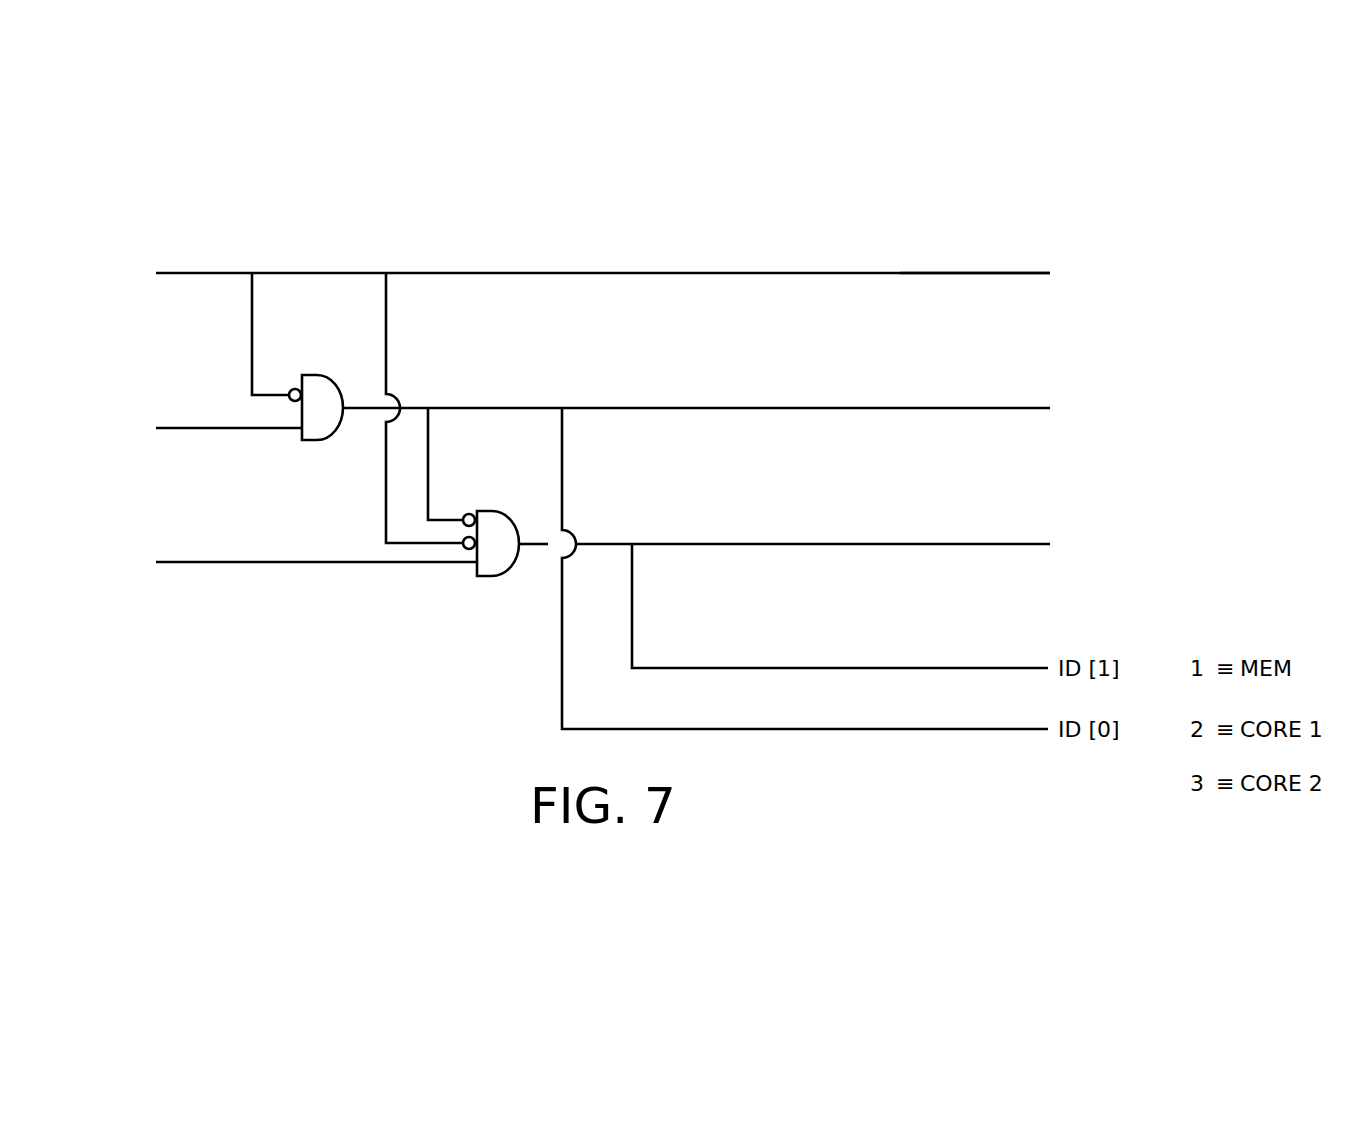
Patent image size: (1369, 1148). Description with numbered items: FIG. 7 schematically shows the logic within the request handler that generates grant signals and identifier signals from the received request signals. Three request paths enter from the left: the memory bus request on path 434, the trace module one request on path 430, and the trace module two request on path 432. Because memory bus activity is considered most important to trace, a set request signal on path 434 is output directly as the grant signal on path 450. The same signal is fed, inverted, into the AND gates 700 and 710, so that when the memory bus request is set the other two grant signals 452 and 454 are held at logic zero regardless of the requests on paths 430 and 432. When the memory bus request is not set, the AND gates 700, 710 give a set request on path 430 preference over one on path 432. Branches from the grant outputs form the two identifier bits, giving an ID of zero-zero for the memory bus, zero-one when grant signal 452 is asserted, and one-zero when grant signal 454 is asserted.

The request signal path 434 is at (202, 272).
The request signal path 430 is at (203, 426).
The request signal path 432 is at (203, 560).
The AND gate 700 is at (323, 374).
The AND gate 710 is at (498, 510).
The grant signal path 450 is at (950, 270).
The grant signal 452 is at (950, 405).
The grant signal 454 is at (950, 540).